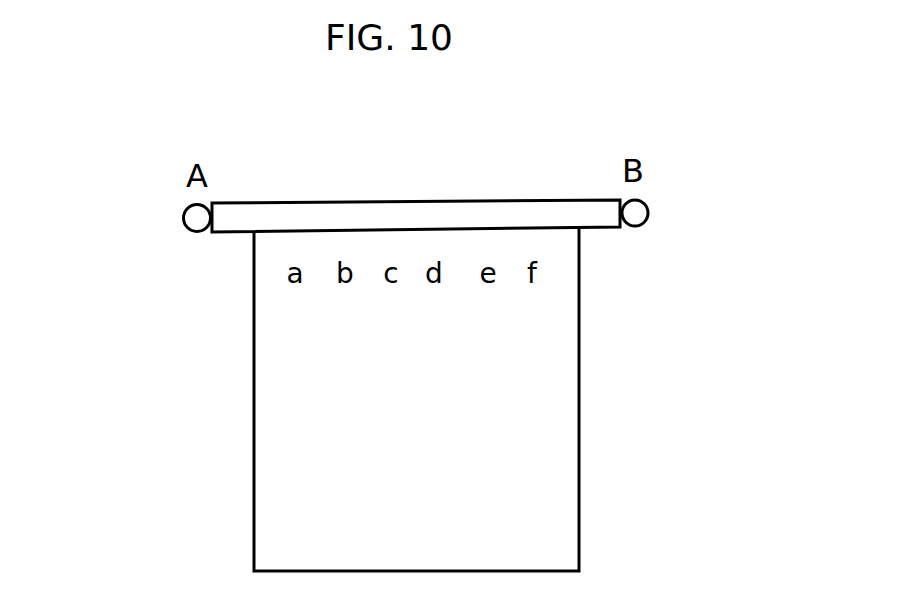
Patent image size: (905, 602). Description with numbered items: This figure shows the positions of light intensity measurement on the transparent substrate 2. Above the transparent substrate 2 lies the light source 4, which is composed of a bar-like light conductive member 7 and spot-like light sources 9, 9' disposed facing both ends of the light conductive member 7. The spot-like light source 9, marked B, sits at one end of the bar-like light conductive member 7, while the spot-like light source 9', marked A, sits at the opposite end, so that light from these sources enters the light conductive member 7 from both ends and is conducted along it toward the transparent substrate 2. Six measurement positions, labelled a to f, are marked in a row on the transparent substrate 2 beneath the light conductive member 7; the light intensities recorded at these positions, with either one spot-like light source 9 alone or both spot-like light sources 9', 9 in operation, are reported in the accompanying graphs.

The transparent substrate 2 is at (579, 377).
The light source 4 is at (517, 161).
The light conductive member 7 is at (542, 208).
The spot-like light source 9 is at (686, 195).
The spot-like light source 9' is at (136, 234).